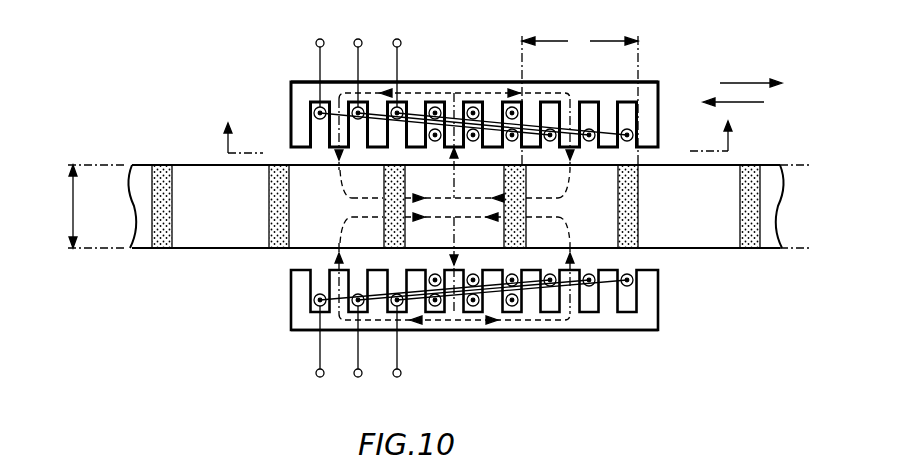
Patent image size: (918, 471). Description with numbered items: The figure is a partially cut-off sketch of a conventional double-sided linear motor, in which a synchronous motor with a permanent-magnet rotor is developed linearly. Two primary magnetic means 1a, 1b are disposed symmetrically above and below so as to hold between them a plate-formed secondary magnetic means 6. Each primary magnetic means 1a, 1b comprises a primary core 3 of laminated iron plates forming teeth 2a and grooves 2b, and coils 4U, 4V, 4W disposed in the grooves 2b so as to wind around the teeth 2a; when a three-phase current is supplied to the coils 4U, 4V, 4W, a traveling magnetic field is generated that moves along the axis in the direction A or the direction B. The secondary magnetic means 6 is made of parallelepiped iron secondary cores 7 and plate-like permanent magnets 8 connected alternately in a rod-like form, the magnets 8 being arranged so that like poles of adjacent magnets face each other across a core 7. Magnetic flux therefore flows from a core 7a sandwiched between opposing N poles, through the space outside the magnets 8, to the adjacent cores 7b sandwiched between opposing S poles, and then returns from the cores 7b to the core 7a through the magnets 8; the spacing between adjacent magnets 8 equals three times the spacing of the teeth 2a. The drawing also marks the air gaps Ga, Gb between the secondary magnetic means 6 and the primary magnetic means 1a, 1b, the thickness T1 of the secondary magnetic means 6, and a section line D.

The secondary magnetic means 6 is at (208, 120).
The primary magnetic means 1a is at (308, 80).
The primary magnetic means 1b is at (303, 337).
The teeth 2a is at (340, 122).
The grooves 2b is at (558, 100).
The primary core 3 is at (660, 90).
The coil 4U is at (326, 118).
The coil 4V is at (364, 118).
The coil 4W is at (403, 118).
The secondary core 7 is at (198, 170).
The secondary core 7a is at (496, 248).
The secondary core 7b is at (598, 255).
The permanent magnet 8 is at (163, 164).
The upper air gap Ga is at (646, 153).
The lower air gap Gb is at (643, 260).
The mover thickness T1 is at (437, 206).
The direction A is at (741, 84).
The direction B is at (740, 103).
The section line D- D is at (492, 136).